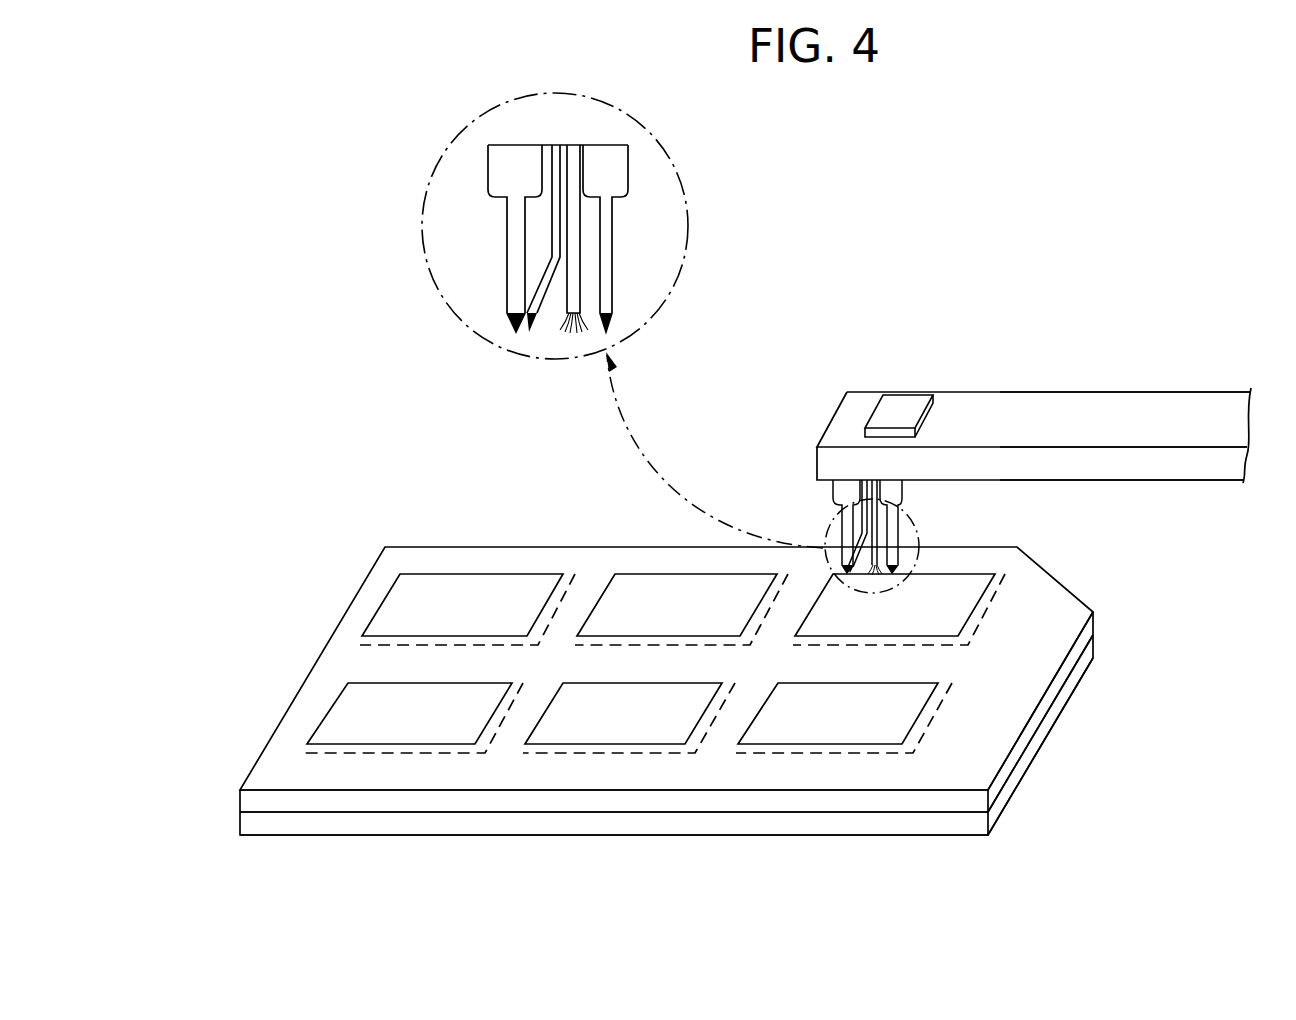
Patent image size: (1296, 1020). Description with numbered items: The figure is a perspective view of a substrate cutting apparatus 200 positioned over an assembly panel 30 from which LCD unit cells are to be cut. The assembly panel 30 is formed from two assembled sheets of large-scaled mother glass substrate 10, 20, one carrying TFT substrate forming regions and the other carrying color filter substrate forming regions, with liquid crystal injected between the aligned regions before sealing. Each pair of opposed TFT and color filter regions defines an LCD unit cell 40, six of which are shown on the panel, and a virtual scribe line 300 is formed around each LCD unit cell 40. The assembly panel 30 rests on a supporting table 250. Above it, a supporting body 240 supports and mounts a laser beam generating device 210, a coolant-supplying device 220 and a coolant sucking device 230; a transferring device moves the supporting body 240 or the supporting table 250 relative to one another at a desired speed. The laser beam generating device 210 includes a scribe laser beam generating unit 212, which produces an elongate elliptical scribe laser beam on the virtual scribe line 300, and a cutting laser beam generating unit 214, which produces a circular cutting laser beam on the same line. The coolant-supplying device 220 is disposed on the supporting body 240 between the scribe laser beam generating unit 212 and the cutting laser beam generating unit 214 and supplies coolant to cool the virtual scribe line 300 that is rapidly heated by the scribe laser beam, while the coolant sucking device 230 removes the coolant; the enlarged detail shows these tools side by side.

The large-scaled mother glass substrate 10 is at (1042, 748).
The large-scaled mother glass substrate 20 is at (1030, 713).
The assembly panel 30 is at (1165, 712).
The LCD unit cell 40 is at (461, 592).
The substrate cutting apparatus 200 is at (1058, 343).
The laser beam generating device 210 is at (907, 405).
The scribe laser beam generating unit 212 is at (833, 493).
The cutting laser beam generating unit 214 is at (905, 490).
The coolant-supplying device 220 is at (843, 527).
The coolant sucking device 230 is at (880, 528).
The supporting body 240 is at (1184, 402).
The supporting table 250 is at (625, 907).
The virtual scribe line 300 is at (993, 572).